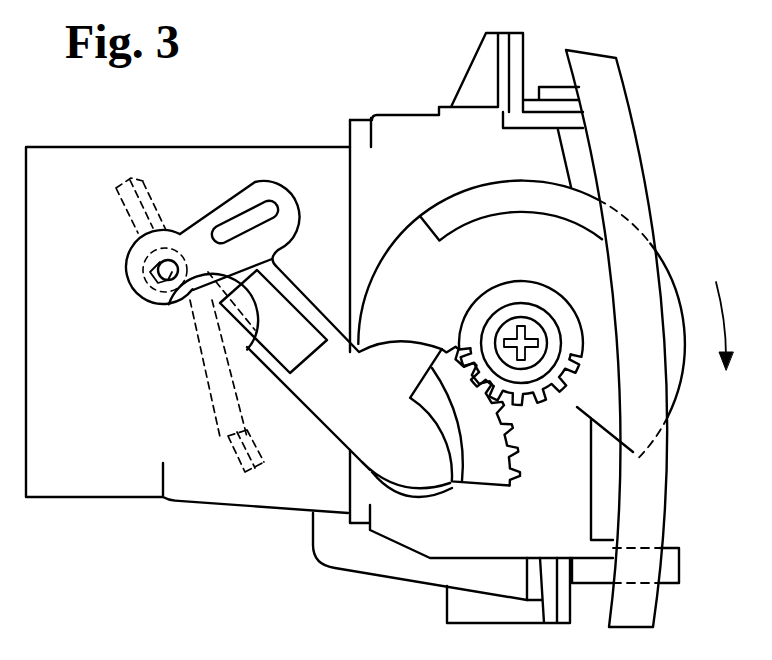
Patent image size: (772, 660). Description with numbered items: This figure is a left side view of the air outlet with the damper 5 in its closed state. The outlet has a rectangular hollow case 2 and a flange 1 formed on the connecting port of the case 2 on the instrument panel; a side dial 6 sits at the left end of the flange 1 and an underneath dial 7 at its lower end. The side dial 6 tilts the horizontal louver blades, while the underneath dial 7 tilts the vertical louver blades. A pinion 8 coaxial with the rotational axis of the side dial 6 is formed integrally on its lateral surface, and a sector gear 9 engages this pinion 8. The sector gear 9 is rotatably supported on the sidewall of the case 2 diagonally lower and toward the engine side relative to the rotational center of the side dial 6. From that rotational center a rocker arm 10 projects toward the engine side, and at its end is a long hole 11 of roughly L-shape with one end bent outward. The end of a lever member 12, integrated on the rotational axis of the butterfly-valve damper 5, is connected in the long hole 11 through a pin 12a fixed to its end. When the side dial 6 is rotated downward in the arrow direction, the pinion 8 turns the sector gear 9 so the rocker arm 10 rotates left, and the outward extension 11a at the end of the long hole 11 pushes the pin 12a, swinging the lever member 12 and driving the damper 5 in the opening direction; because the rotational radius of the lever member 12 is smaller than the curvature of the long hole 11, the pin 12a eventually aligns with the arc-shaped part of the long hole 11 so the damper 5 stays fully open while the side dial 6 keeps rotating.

The flange 1 is at (618, 90).
The case 2 is at (312, 150).
The damper 5 is at (220, 440).
The side dial 6 is at (664, 278).
The underneath dial 7 is at (679, 565).
The pinion 8 is at (533, 400).
The sector gear 9 is at (513, 447).
The rocker arm 10 is at (333, 428).
The long hole 11 is at (247, 210).
The outward extension 11a is at (155, 272).
The lever member 12 is at (172, 333).
The pin 12a is at (177, 290).